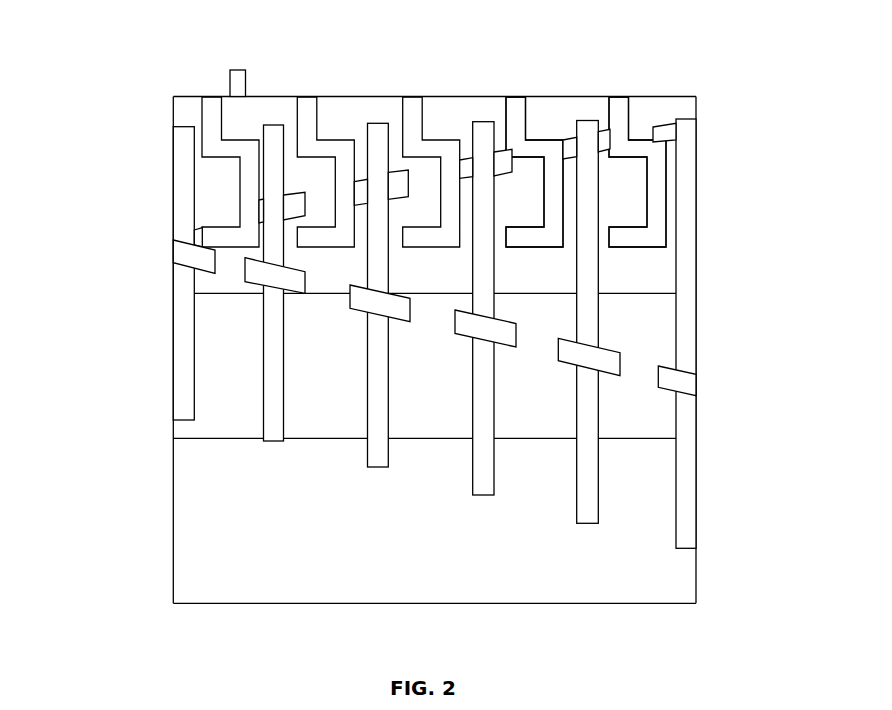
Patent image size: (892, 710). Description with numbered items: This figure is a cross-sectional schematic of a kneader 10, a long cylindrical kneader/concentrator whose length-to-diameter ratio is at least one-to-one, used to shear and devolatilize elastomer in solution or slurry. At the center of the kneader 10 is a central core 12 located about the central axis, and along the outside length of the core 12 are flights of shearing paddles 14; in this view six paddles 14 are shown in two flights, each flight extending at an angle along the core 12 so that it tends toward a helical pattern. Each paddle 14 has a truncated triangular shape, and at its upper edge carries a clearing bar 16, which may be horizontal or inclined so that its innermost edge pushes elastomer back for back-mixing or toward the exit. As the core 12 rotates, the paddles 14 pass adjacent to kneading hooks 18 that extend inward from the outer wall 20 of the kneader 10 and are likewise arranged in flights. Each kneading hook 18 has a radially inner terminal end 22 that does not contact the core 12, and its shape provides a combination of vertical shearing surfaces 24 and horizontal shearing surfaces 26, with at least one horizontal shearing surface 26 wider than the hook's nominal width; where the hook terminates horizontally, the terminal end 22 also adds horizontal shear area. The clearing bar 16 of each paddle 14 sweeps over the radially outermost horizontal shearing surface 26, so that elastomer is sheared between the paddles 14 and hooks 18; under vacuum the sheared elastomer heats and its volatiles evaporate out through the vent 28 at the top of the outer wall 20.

The kneader 10 is at (148, 397).
The central core 12 is at (223, 428).
The paddle 14 is at (483, 135).
The clearing bar 16 is at (305, 202).
The kneading hook 18 is at (308, 113).
The outer wall 20 is at (452, 103).
The radially inner terminal end 22 is at (630, 250).
The vertical shearing surface 24 is at (630, 120).
The horizontal shearing surface 26 is at (532, 137).
The vent 28 is at (238, 68).